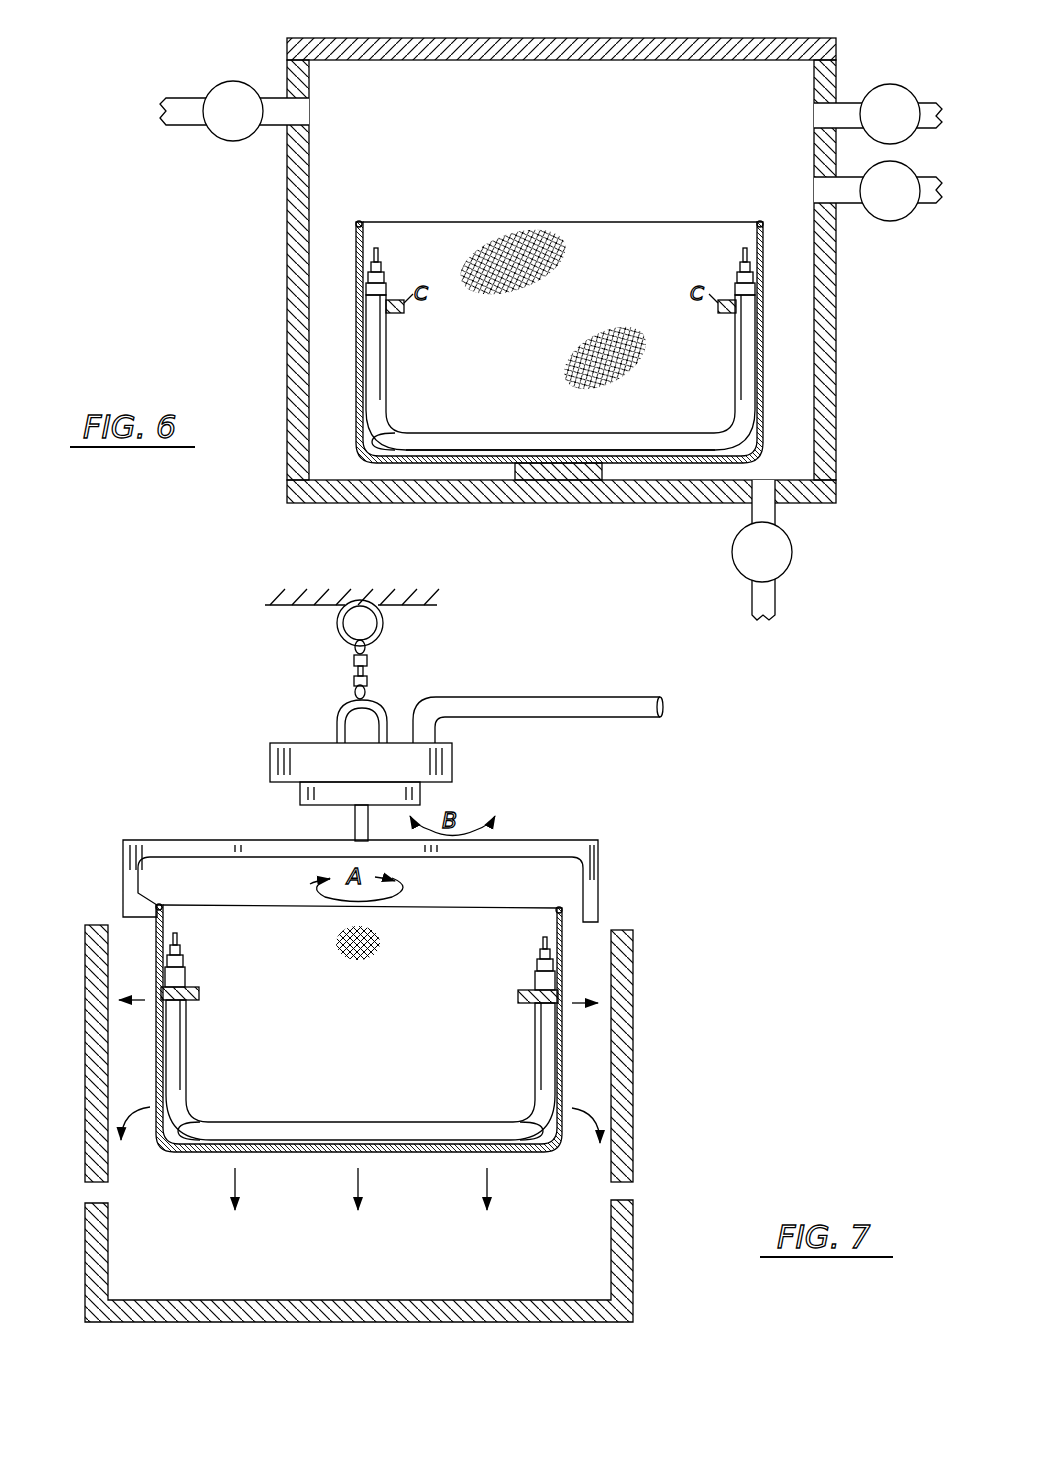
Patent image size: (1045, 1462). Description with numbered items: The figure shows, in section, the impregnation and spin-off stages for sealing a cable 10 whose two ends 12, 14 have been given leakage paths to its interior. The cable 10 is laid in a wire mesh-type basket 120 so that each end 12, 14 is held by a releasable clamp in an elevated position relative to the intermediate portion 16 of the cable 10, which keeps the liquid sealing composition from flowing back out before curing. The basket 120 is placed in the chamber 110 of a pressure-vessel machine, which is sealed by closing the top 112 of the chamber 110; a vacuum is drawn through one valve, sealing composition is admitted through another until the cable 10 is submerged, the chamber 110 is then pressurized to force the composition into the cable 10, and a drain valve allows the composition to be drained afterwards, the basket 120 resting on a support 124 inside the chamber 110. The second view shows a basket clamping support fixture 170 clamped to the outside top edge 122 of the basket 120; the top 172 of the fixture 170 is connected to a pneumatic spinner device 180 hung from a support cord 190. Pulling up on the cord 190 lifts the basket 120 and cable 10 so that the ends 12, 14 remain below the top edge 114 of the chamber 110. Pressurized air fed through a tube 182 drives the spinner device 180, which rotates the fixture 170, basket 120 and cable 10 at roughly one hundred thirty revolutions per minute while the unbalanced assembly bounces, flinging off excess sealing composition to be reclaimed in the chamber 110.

In FIG. 6, the cable 10 is at (479, 426).
In FIG. 7, the cable 10 is at (304, 1113).
In FIG. 6, the end of the cable 12 is at (379, 246).
In FIG. 7, the end of the cable 12 is at (192, 957).
In FIG. 6, the end of the cable 14 is at (745, 262).
In FIG. 7, the end of the cable 14 is at (530, 961).
In FIG. 6, the intermediate portion of the cable 16 is at (562, 425).
In FIG. 6, the chamber 110 is at (526, 311).
In FIG. 7, the chamber 110 is at (457, 1106).
In FIG. 6, the top of the chamber 112 is at (395, 38).
In FIG. 6, the top edge of the chamber 114 is at (287, 40).
In FIG. 7, the top edge of the chamber 114 is at (625, 930).
In FIG. 6, the basket 120 is at (480, 372).
In FIG. 7, the basket 120 is at (562, 957).
In FIG. 7, the outside top edge of the basket 122 is at (558, 912).
In FIG. 6, the support pedestal 124 is at (598, 481).
In FIG. 7, the basket clamping support fixture 170 is at (323, 845).
In FIG. 7, the top of the basket clamping support fixture 172 is at (232, 845).
In FIG. 7, the pneumatic spinner device 180 is at (268, 757).
In FIG. 7, the tube 182 is at (600, 700).
In FIG. 7, the support cord 190 is at (352, 670).